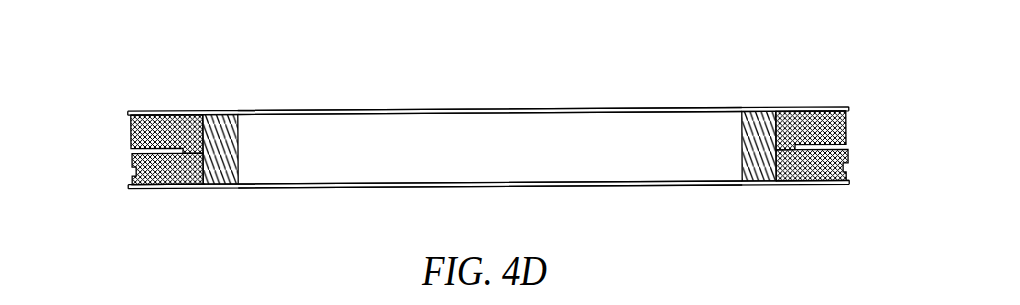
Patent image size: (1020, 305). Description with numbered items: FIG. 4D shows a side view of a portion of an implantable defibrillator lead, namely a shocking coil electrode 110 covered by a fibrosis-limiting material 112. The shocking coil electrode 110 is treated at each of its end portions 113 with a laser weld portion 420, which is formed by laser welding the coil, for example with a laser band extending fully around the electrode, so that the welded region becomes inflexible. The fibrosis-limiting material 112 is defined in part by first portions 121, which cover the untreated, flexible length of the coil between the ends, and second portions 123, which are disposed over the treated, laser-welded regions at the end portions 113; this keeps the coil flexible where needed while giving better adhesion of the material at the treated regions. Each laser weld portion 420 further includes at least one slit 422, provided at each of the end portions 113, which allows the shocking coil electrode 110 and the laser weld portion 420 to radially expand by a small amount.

The shocking coil electrode 110 is at (727, 207).
The fibrosis-limiting material 112 is at (490, 186).
The end portions 113 is at (133, 194).
The first portions 121 is at (206, 104).
The second portions 123 is at (203, 104).
The laser weld portion 420 is at (823, 116).
The slit 422 is at (870, 198).